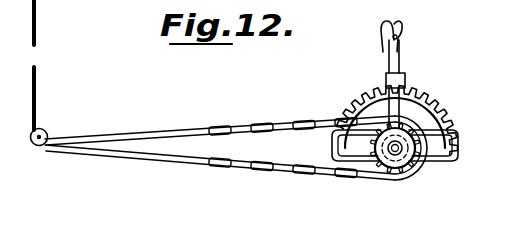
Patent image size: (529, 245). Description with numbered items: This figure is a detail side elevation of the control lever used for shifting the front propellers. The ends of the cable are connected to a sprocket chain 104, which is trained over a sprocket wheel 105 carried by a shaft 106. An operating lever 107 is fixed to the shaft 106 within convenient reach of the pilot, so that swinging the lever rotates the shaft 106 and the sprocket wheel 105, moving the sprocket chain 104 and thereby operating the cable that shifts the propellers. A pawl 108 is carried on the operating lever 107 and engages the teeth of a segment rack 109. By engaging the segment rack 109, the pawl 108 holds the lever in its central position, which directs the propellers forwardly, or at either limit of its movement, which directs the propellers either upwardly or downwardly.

The sprocket chain 104 is at (288, 124).
The sprocket wheel 105 is at (381, 164).
The shaft 106 is at (408, 154).
The operating lever 107 is at (403, 108).
The pawl 108 is at (407, 77).
The segment rack 109 is at (352, 100).